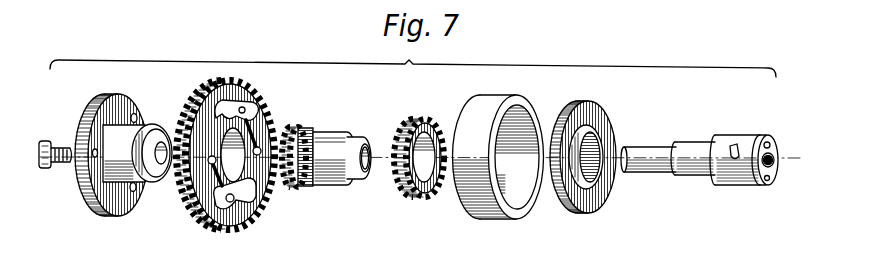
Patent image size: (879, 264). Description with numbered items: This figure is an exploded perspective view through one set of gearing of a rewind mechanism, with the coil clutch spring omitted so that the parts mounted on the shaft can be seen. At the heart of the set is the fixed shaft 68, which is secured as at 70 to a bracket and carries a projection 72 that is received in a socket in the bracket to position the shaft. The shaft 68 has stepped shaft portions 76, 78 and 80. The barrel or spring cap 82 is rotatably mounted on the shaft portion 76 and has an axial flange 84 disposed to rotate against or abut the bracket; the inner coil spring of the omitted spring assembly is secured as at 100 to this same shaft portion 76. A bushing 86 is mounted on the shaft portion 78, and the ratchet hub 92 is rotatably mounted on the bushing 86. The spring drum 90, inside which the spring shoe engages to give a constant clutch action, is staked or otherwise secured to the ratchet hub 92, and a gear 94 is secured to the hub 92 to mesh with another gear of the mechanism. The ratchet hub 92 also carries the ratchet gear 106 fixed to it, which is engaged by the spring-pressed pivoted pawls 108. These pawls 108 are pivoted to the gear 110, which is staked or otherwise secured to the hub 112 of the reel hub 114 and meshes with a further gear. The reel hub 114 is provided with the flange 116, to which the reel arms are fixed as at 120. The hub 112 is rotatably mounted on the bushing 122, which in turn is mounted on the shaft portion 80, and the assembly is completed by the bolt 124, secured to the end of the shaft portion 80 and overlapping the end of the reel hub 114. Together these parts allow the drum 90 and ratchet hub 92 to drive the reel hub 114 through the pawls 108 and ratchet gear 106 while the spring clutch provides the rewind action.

The fixed shaft 68 is at (749, 186).
The securing point of shaft 70 is at (769, 185).
The projection 72 is at (771, 153).
The stepped shaft portion 76 is at (728, 186).
The stepped shaft portion 78 is at (689, 176).
The stepped shaft portion 80 is at (646, 173).
The barrel or spring cap 82 is at (596, 173).
The axial flange 84 is at (598, 138).
The bushing 86 is at (365, 185).
The spring drum 90 is at (492, 215).
The ratchet hub 92 is at (339, 186).
The gear 94 is at (413, 197).
The securing point of inner coil spring 100 is at (735, 143).
The ratchet gear 106 is at (306, 190).
The spring-pressed pivoted pawls 108 is at (252, 102).
The gear 110 is at (211, 224).
The hub of reel hub 112 is at (119, 198).
The reel hub 114 is at (97, 208).
The flange 116 is at (100, 166).
The fixing point of reel arms 120 is at (84, 140).
The bushing 122 is at (152, 126).
The bolt 124 is at (48, 170).